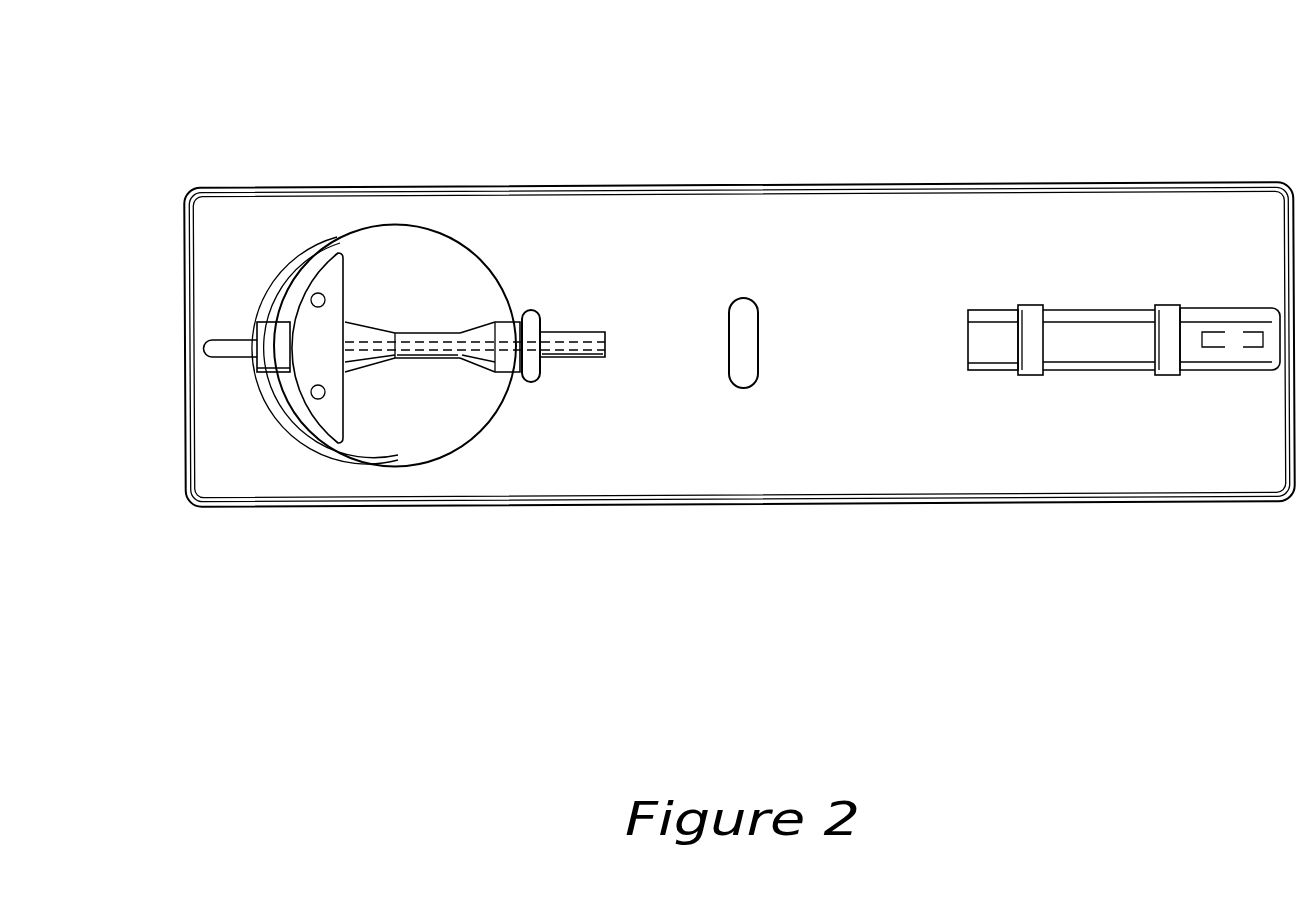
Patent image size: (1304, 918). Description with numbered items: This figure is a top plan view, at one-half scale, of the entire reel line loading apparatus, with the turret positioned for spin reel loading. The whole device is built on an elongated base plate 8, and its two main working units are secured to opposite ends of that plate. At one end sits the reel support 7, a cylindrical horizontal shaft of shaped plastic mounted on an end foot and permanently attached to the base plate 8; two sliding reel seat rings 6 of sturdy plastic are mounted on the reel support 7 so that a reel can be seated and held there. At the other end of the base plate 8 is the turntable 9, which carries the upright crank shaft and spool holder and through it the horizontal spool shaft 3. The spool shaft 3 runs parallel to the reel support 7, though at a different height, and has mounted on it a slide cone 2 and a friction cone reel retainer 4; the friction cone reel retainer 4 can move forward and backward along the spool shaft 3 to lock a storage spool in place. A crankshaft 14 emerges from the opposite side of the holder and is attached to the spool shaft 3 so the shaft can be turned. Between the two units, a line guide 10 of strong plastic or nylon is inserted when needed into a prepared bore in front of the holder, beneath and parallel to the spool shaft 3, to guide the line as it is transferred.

The slide cone 2 is at (370, 363).
The spool shaft 3 is at (583, 357).
The friction cone reel retainer 4 is at (497, 371).
The sliding reel seat rings 6 is at (1170, 303).
The reel support 7 is at (1230, 307).
The base plate 8 is at (480, 187).
The turntable 9 is at (325, 243).
The line guide 10 is at (742, 298).
The crankshaft 14 is at (258, 373).